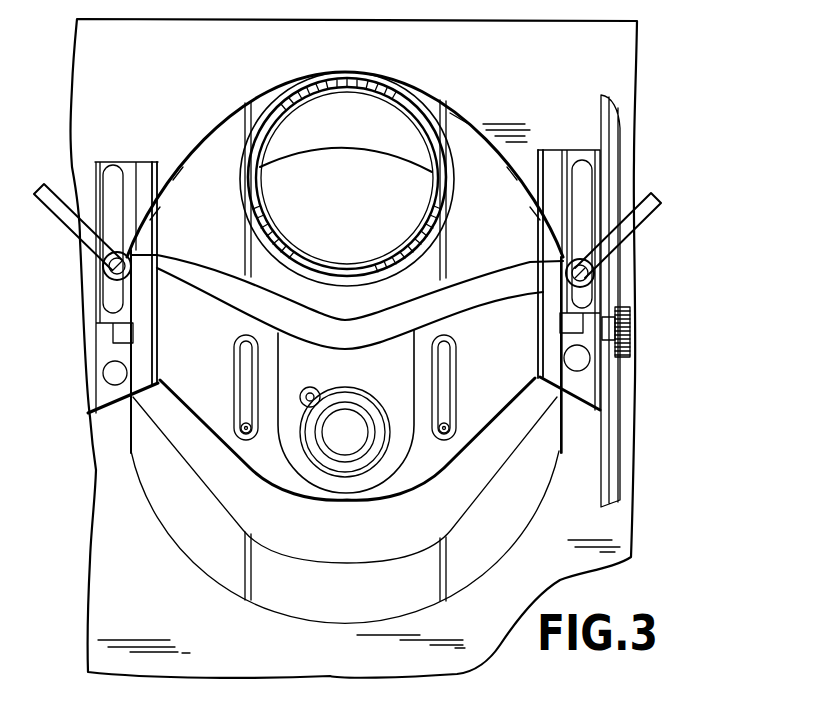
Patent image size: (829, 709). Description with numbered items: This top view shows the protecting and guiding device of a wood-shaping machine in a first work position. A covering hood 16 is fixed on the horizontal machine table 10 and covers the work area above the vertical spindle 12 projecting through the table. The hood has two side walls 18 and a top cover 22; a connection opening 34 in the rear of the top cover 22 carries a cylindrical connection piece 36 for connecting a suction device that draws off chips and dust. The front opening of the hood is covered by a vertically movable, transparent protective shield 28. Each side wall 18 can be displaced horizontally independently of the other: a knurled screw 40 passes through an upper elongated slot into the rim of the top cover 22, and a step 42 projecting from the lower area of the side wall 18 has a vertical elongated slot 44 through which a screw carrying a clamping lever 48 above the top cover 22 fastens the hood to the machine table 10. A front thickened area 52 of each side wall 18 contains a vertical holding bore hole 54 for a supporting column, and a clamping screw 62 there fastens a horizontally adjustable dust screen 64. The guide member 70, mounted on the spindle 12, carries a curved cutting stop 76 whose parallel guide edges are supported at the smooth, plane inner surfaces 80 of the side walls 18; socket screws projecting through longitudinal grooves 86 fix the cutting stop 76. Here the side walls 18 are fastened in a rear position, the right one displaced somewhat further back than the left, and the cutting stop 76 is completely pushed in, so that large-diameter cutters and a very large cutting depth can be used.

The machine table 10 is at (274, 658).
The spindle 12 is at (360, 445).
The covering hood 16 is at (486, 108).
The side walls 18 is at (143, 172).
The top cover 22 is at (233, 125).
The protective shield 28 is at (222, 583).
The connection opening 34 is at (346, 175).
The connection piece 36 is at (333, 72).
The knurled screw 40 is at (595, 232).
The step 42 is at (97, 303).
The vertical elongated slot 44 is at (112, 170).
The clamping lever 48 is at (40, 186).
The thickened area 52 is at (100, 400).
The holding bore hole 54 is at (103, 375).
The clamping screw 62 is at (630, 330).
The dust screen 64 is at (612, 122).
The guide member 70 is at (254, 498).
The curved cutting stop 76 is at (497, 427).
The inner surfaces 80 is at (155, 384).
The longitudinal grooves 86 is at (247, 400).